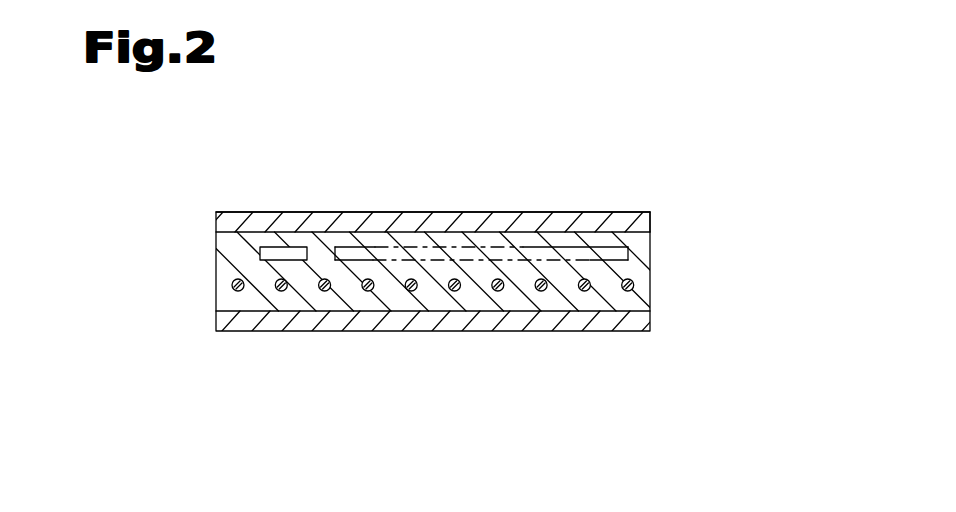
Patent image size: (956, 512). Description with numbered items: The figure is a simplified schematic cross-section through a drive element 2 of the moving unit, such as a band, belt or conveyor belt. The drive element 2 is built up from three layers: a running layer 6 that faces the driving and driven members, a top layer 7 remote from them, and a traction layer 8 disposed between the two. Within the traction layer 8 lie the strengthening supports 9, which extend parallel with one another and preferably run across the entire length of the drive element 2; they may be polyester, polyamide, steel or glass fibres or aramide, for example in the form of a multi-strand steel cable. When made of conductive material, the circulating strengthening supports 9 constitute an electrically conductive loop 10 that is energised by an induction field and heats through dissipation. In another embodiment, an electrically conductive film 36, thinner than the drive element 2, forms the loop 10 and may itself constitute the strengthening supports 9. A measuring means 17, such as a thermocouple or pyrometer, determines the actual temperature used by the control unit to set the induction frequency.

The drive element 2 is at (566, 193).
The running layer 6 is at (663, 210).
The top layer 7 is at (663, 326).
The traction layer 8 is at (211, 271).
The strengthening supports 9 is at (234, 305).
The electrically conductive loop 10 is at (316, 306).
The measuring means 17 is at (289, 212).
The electrically conductive film 36 is at (447, 212).